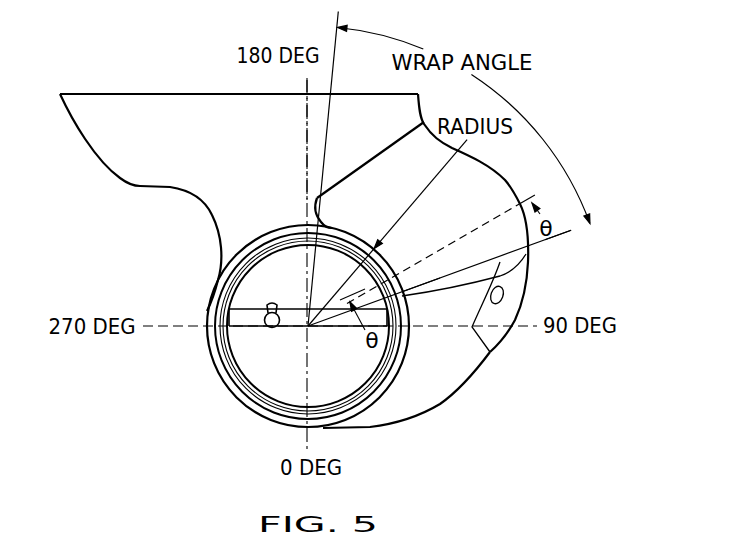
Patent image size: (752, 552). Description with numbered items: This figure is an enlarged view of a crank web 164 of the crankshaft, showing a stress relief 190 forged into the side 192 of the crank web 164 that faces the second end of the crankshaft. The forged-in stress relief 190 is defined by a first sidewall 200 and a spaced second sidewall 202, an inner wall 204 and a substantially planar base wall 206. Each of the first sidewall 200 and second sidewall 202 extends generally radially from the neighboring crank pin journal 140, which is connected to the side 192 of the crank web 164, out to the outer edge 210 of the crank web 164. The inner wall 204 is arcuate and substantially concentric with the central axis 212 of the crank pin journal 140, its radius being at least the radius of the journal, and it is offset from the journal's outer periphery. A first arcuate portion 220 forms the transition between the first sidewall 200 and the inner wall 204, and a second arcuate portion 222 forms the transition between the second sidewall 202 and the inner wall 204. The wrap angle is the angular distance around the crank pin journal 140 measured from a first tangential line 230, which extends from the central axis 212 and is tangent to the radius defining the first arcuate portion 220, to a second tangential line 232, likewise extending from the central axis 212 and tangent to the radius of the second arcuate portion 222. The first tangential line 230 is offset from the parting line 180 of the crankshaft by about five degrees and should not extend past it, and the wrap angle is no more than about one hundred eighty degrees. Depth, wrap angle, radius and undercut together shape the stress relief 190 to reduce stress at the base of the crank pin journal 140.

The crank pin journal 140 is at (250, 390).
The crank web 164 is at (433, 400).
The parting line 180 is at (303, 118).
The forged-in stress relief 190 is at (360, 148).
The side of the crank web 192 is at (226, 213).
The first sidewall 200 is at (359, 169).
The second sidewall 202 is at (460, 280).
The inner wall 204 is at (383, 253).
The base wall 206 is at (480, 194).
The outer edge 210 is at (463, 152).
The central axis 212 is at (300, 330).
The first arcuate portion 220 is at (304, 206).
The second arcuate portion 222 is at (408, 292).
The first tangential line 230 is at (330, 33).
The second tangential line 232 is at (572, 240).